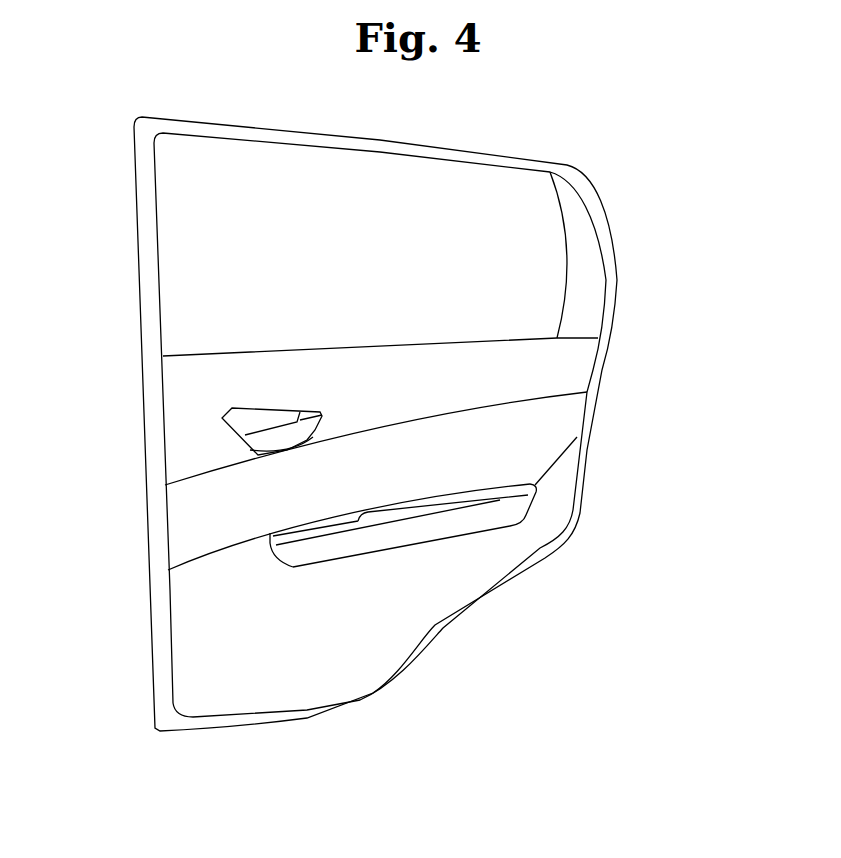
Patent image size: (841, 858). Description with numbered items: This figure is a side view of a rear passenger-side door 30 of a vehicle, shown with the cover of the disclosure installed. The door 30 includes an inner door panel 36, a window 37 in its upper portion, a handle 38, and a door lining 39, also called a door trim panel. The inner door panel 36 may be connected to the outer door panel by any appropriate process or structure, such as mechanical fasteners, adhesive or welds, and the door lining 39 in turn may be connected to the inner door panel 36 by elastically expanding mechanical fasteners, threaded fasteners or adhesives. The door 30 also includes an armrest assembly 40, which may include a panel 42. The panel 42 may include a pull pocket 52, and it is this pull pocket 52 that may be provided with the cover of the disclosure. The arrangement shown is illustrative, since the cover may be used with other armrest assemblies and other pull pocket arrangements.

The door 30 is at (303, 697).
The inner door panel 36 is at (142, 197).
The window 37 is at (197, 250).
The handle 38 is at (262, 440).
The door lining 39 is at (188, 670).
The armrest assembly 40 is at (398, 538).
The panel 42 is at (333, 517).
The pull pocket 52 is at (417, 503).